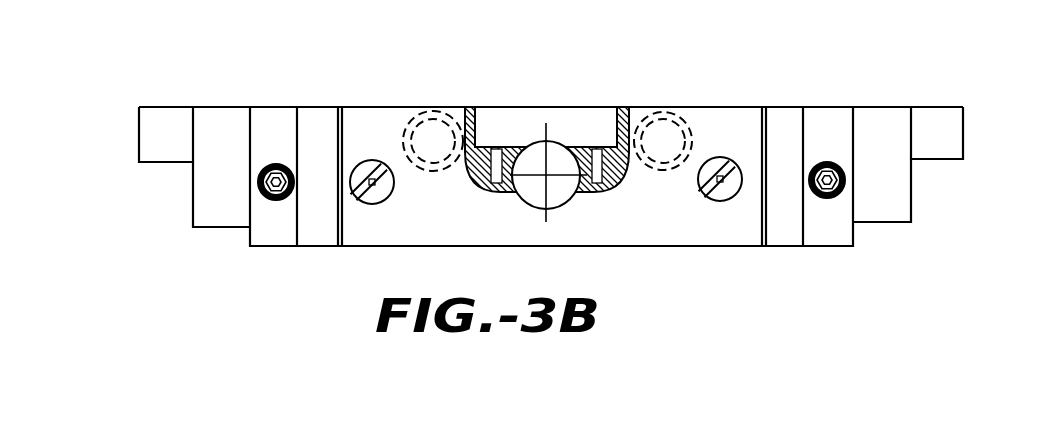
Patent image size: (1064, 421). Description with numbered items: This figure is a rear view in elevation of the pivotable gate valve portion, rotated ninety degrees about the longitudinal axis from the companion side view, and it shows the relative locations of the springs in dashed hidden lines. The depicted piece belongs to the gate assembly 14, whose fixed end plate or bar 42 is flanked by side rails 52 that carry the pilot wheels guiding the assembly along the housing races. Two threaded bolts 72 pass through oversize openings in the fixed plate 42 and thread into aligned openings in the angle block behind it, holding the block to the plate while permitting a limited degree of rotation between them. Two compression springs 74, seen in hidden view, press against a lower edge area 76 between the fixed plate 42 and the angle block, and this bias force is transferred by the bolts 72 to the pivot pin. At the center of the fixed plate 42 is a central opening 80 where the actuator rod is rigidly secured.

The gate assembly 14 is at (315, 301).
The fixed plate 42 is at (633, 227).
The side rails 52 is at (163, 147).
The threaded bolts 72 is at (362, 162).
The compression springs 74 is at (435, 118).
The lower edge area 76 is at (387, 118).
The central opening 80 is at (561, 153).